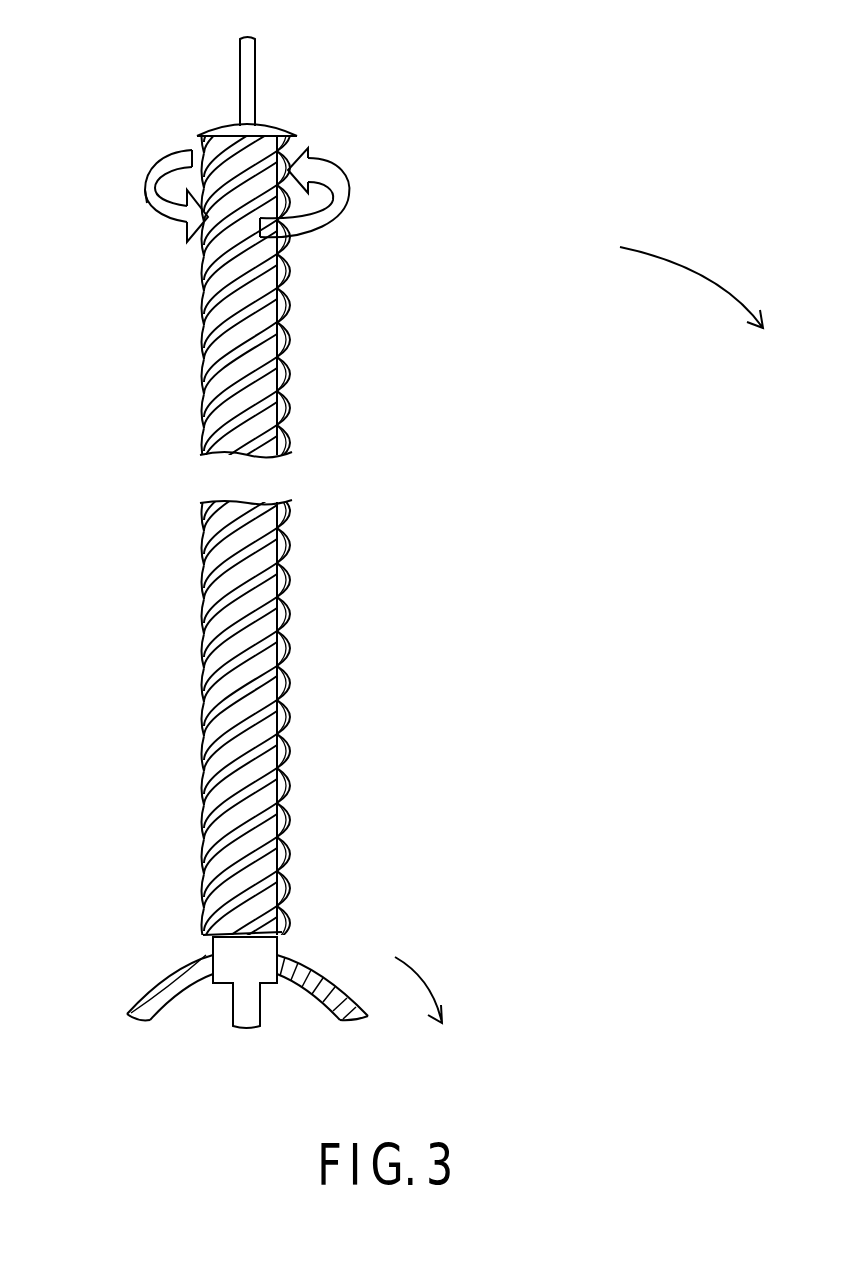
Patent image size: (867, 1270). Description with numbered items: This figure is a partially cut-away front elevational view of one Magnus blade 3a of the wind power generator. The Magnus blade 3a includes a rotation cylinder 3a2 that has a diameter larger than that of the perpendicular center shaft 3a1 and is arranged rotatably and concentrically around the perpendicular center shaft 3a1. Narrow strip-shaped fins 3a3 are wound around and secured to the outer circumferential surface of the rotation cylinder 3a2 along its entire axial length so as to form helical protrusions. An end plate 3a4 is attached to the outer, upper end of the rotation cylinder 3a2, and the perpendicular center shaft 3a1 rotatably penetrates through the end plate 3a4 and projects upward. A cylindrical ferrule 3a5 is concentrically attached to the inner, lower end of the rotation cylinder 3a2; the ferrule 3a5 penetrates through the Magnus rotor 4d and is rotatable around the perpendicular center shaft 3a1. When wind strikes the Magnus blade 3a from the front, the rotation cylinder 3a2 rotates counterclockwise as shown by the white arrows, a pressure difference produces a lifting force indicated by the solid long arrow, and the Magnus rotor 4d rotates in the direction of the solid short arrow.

The Magnus blade 3a is at (143, 133).
The perpendicular center shaft 3a1 is at (247, 62).
The rotation cylinder 3a2 is at (245, 297).
The fins 3a3 is at (208, 357).
The end plate 3a4 is at (268, 130).
The cylindrical ferrule 3a5 is at (258, 942).
The Magnus rotor 4d is at (142, 992).